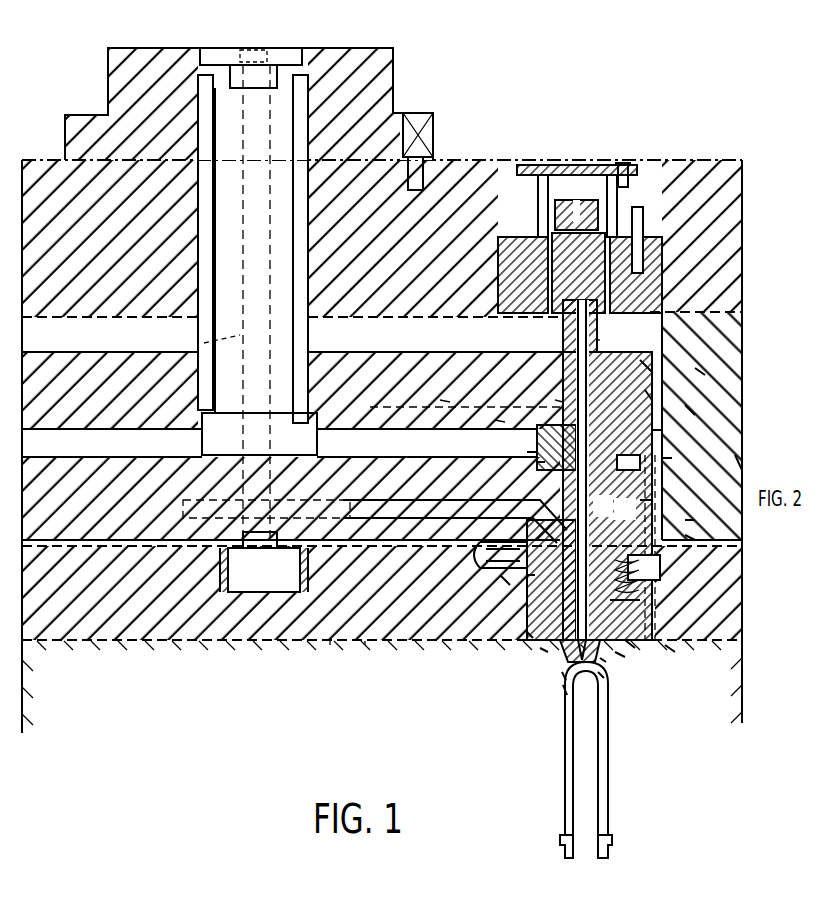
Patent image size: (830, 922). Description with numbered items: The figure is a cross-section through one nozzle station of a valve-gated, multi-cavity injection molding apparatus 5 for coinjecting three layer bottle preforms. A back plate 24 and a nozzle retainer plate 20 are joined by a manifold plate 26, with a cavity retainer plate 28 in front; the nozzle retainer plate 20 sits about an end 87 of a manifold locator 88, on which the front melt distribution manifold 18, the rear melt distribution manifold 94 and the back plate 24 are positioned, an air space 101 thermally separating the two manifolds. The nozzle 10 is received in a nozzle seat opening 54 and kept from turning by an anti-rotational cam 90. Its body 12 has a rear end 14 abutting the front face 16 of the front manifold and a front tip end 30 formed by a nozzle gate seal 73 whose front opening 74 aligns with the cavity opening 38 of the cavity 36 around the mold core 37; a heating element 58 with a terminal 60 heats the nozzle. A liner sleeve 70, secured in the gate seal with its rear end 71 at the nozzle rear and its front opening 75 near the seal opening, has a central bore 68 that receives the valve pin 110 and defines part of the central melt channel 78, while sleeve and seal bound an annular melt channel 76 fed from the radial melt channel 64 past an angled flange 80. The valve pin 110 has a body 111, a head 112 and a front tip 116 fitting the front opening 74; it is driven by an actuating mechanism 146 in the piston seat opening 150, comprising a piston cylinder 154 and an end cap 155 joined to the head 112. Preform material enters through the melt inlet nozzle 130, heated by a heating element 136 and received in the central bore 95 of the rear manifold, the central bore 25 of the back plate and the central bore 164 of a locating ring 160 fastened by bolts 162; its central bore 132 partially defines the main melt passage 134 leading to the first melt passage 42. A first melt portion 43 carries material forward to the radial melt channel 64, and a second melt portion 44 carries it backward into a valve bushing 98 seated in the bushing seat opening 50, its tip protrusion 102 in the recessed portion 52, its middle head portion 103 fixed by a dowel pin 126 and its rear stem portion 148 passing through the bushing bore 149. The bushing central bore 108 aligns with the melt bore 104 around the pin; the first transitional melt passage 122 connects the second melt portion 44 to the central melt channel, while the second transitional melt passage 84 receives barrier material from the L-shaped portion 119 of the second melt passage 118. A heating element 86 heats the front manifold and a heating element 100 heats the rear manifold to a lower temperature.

The injection molding apparatus 5 is at (690, 94).
The nozzle 10 is at (640, 595).
The body 12 is at (535, 575).
The rear end 14 is at (625, 509).
The front face 16 is at (335, 642).
The front melt distribution manifold 18 is at (690, 535).
The nozzle retainer plate 20 is at (730, 590).
The back plate 24 is at (735, 176).
The central bore 25 is at (195, 210).
The manifold plate 26 is at (735, 327).
The cavity retainer plate 28 is at (35, 676).
The front tip end 30 is at (590, 672).
The cavity 36 is at (606, 798).
The mold core 37 is at (608, 852).
The cavity opening 38 is at (565, 688).
The first melt passage 42 is at (365, 641).
The first melt portion 43 is at (450, 548).
The second melt portion 44 is at (470, 452).
The bushing seat opening 50 is at (540, 462).
The recessed portion 52 is at (650, 500).
The nozzle seat opening 54 is at (542, 650).
The heating element 58 is at (500, 580).
The terminal 60 is at (480, 555).
The radial melt channel 64 is at (530, 634).
The central bore 68 is at (632, 646).
The liner sleeve 70 is at (660, 572).
The rear end 71 is at (602, 506).
The nozzle gate seal 73 is at (620, 656).
The front opening 74 is at (601, 676).
The front opening 75 is at (606, 661).
The annular melt channel 76 is at (672, 650).
The central melt channel 78 is at (562, 642).
The angled flange 80 is at (640, 606).
The second transitional melt passage 84 is at (545, 435).
The heating element 86 is at (660, 556).
The end 87 is at (300, 600).
The manifold locator 88 is at (250, 596).
The anti-rotational cam 90 is at (640, 575).
The rear melt distribution manifold 94 is at (700, 370).
The central bore 95 is at (192, 398).
The valve bushing 98 is at (740, 463).
The heating element 100 is at (735, 315).
The air space 101 is at (113, 455).
The tip protrusion 102 is at (670, 458).
The middle head portion 103 is at (660, 430).
The melt bore 104 is at (425, 450).
The central bore 108 is at (650, 395).
The valve pin 110 is at (690, 520).
The body 111 is at (690, 410).
The head 112 is at (563, 330).
The front tip 116 is at (565, 672).
The second melt passage 118 is at (445, 400).
The L-shaped portion 119 is at (500, 420).
The first transitional melt passage 122 is at (527, 452).
The dowel pin 126 is at (640, 470).
The melt inlet nozzle 130 is at (290, 218).
The central bore 132 is at (209, 344).
The main melt passage 134 is at (260, 316).
The heating element 136 is at (200, 52).
The actuating mechanism 146 is at (645, 245).
The rear stem portion 148 is at (645, 365).
The bushing bore 149 is at (560, 400).
The piston seat opening 150 is at (496, 290).
The piston cylinder 154 is at (606, 163).
The end cap 155 is at (597, 340).
The locating ring 160 is at (395, 65).
The bolts 162 is at (418, 118).
The central bore 164 is at (310, 80).